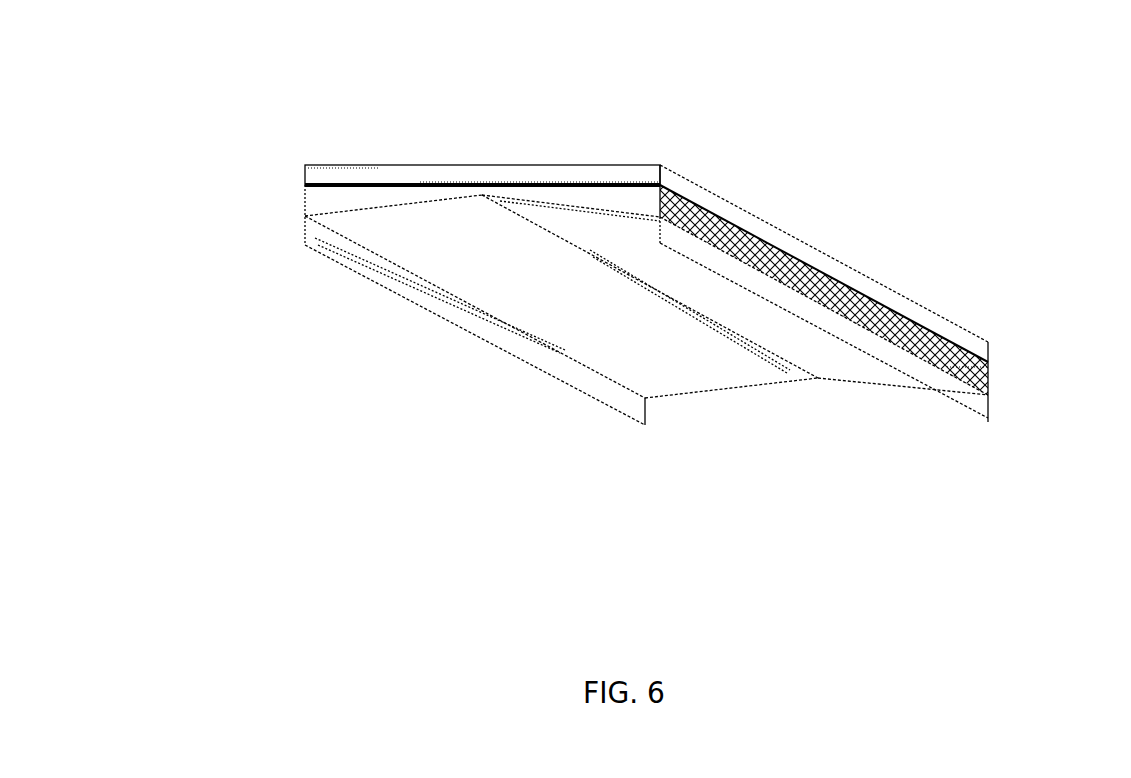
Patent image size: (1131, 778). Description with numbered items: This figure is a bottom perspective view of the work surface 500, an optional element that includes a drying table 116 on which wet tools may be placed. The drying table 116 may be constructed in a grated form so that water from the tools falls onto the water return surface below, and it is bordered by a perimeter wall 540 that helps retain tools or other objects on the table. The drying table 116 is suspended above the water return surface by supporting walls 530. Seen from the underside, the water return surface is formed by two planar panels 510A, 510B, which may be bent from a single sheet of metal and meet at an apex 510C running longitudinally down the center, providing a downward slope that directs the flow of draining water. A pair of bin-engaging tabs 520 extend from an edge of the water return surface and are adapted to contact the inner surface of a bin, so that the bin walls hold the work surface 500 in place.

The work surface 500 is at (803, 117).
The perimeter wall 540 is at (592, 163).
The supporting walls 530 is at (325, 199).
The bin-engaging tabs 520 is at (385, 278).
The drying table 116 is at (770, 262).
The first planar panel 510A is at (527, 287).
The second planar panel 510B is at (640, 252).
The apex 510C is at (817, 388).